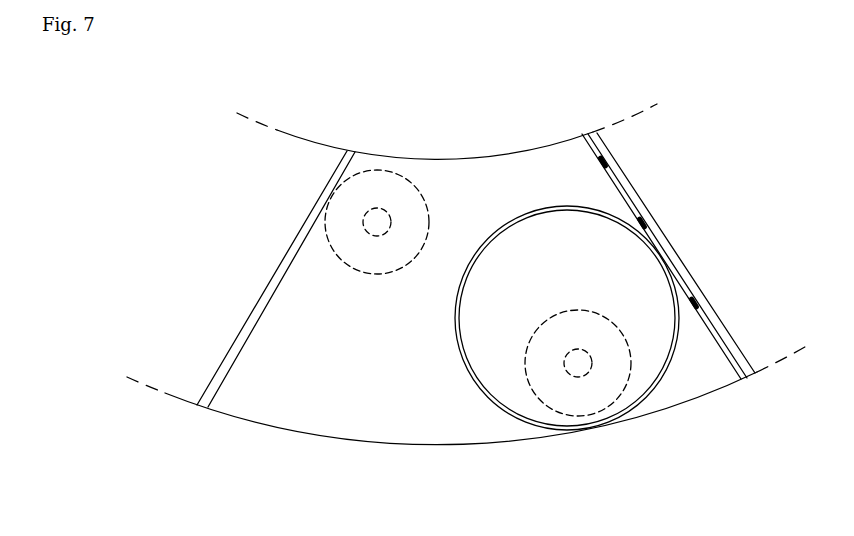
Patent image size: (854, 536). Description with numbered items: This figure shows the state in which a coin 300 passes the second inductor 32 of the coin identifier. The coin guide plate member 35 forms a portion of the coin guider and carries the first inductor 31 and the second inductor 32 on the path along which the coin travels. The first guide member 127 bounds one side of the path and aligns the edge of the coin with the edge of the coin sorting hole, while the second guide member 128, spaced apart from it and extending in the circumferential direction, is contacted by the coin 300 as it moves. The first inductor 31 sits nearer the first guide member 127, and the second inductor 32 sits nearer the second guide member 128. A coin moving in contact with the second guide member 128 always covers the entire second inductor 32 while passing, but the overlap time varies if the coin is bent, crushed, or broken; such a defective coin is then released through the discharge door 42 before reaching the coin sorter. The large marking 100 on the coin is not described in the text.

The first inductor 31 is at (388, 170).
The second inductor 32 is at (622, 397).
The coin guide plate member 35 is at (450, 177).
The discharge door 42 is at (672, 238).
The marker disc 100 is at (567, 318).
The first guide member 127 is at (477, 132).
The second guide member 128 is at (446, 487).
The coin 300 is at (603, 213).